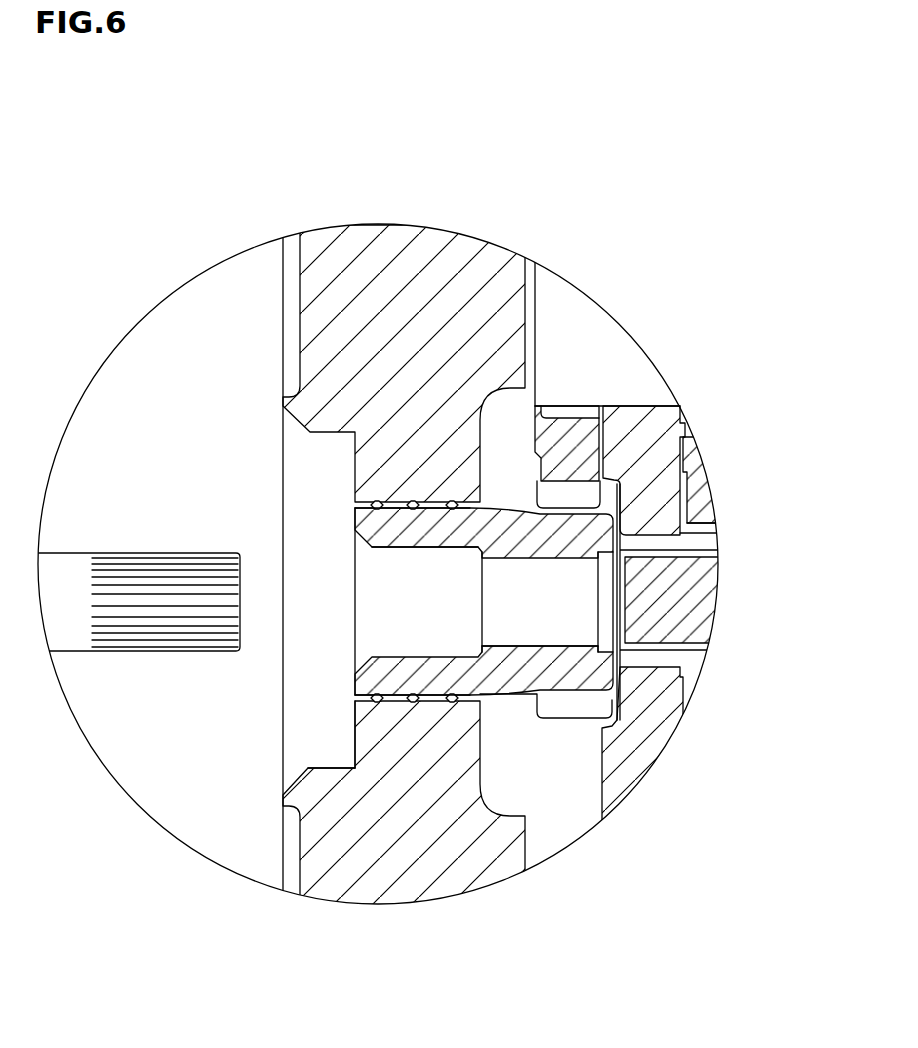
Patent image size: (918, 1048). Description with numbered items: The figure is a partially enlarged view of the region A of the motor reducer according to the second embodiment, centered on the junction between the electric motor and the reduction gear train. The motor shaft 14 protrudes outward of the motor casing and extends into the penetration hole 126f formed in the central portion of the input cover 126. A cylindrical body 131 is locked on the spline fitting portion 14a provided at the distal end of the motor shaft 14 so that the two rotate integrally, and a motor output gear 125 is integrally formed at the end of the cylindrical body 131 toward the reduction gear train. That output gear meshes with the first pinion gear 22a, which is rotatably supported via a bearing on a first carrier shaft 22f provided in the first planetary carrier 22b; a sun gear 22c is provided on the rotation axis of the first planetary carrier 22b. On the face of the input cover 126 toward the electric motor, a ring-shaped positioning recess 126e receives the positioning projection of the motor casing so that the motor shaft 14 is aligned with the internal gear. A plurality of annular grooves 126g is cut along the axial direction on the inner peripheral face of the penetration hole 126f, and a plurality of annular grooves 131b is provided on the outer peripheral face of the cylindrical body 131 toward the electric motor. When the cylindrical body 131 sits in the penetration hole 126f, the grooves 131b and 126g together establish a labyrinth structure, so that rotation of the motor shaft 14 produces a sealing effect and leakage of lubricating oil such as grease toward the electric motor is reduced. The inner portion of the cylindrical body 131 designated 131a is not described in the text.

The enlarged portion A is at (158, 303).
The motor shaft 14 is at (135, 551).
The spline fitting portion 14a is at (175, 570).
The first pinion gear 22a is at (567, 448).
The first planetary carrier 22b is at (660, 430).
The sun gear 22c is at (660, 579).
The first carrier shaft 22f is at (630, 365).
The motor output gear 125 is at (553, 712).
The input cover 126 is at (324, 601).
The positioning recess 126e is at (322, 768).
The penetration hole 126f is at (358, 676).
The annular grooves 126g is at (413, 703).
The cylindrical body 131 is at (502, 630).
The inner peripheral surface of hollow shaft 131a is at (572, 632).
The annular grooves 131b is at (374, 547).